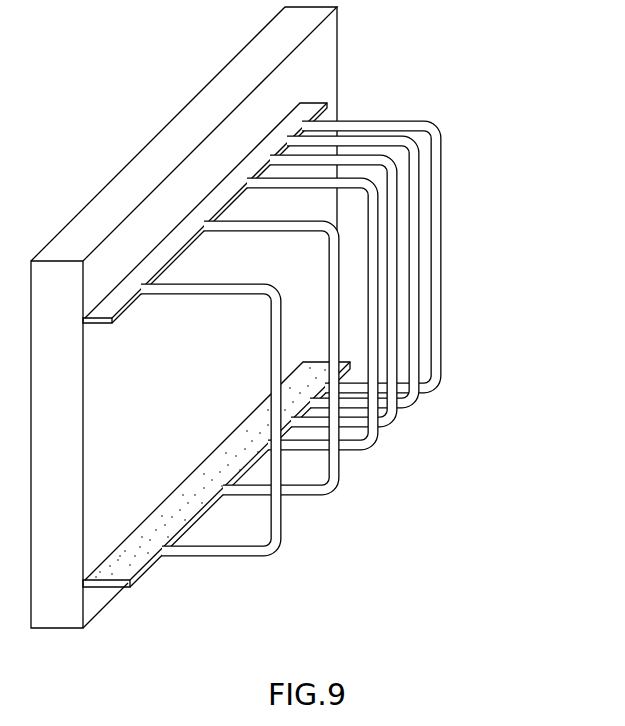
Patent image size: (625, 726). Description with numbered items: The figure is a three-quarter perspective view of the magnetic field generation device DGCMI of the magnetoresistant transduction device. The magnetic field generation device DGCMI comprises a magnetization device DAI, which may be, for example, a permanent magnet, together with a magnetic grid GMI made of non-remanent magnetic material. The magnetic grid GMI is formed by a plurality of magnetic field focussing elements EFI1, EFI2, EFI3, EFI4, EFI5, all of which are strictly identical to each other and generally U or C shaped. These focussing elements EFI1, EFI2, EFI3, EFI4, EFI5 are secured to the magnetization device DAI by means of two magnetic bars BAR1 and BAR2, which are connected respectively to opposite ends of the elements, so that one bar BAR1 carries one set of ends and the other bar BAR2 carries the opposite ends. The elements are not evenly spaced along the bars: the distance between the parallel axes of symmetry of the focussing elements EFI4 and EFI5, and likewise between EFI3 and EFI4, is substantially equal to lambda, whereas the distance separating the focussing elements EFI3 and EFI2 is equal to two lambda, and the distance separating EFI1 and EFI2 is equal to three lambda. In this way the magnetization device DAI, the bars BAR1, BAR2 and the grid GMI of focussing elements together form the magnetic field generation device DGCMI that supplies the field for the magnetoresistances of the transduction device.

The magnetization device DAI is at (233, 64).
The magnetic bar BAR1 is at (136, 568).
The magnetic bar BAR2 is at (290, 123).
The magnetic field generation device DGCMI is at (326, 314).
The magnetic field focussing element EFI1 is at (282, 530).
The magnetic field focussing element EFI2 is at (340, 478).
The magnetic field focussing element EFI3 is at (389, 426).
The magnetic field focussing element EFI4 is at (418, 398).
The magnetic field focussing element EFI5 is at (441, 372).
The magnetic grid GMI is at (284, 492).